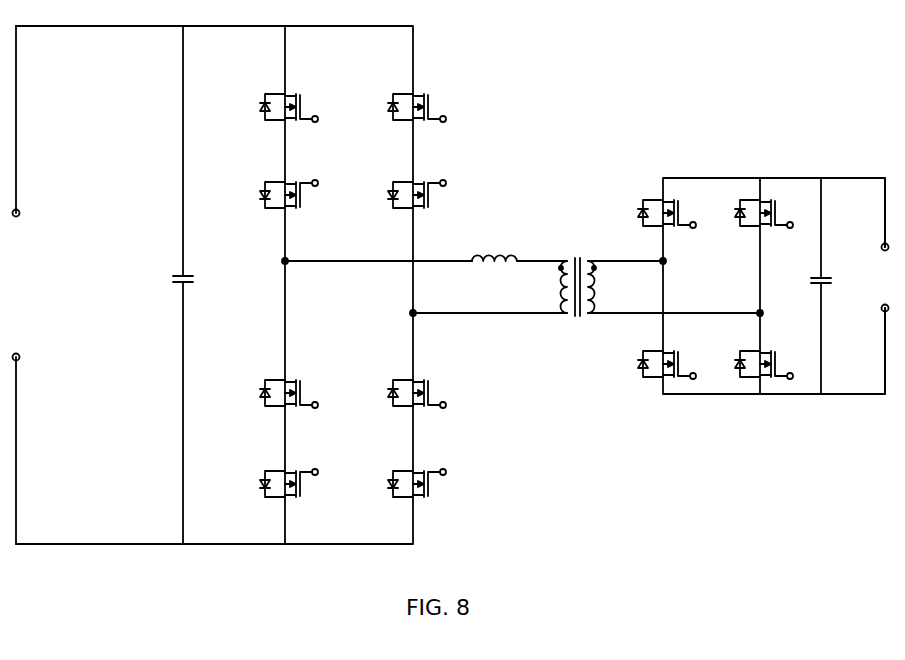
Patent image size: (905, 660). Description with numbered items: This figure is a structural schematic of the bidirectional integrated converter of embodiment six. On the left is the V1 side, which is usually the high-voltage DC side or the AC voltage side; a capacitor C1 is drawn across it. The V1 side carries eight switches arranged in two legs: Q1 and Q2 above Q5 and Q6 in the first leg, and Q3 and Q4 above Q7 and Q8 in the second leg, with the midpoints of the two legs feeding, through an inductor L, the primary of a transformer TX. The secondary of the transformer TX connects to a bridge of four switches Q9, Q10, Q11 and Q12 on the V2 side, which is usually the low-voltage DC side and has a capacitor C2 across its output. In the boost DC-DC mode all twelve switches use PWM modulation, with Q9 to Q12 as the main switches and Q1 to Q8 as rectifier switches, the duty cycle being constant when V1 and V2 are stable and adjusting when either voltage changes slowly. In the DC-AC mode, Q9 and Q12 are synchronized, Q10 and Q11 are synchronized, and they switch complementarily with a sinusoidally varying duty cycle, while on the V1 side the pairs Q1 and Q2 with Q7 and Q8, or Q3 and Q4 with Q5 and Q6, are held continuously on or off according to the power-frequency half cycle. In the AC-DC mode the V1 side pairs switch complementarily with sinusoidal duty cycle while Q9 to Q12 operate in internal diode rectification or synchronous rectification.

The high-voltage DC or AC voltage side V1 is at (18, 285).
The low-voltage DC side V2 is at (880, 286).
The first capacitor C1 is at (168, 285).
The second capacitor C2 is at (807, 286).
The inductor L is at (519, 246).
The transformer TX is at (577, 274).
The rectifier switch Q1 is at (294, 108).
The rectifier switch Q2 is at (294, 197).
The rectifier switch Q3 is at (423, 108).
The rectifier switch Q4 is at (423, 197).
The rectifier switch Q5 is at (293, 394).
The rectifier switch Q6 is at (293, 483).
The rectifier switch Q7 is at (422, 394).
The rectifier switch Q8 is at (425, 483).
The main switch Q9 is at (675, 214).
The main switch Q10 is at (775, 214).
The main switch Q11 is at (679, 365).
The main switch Q12 is at (775, 365).